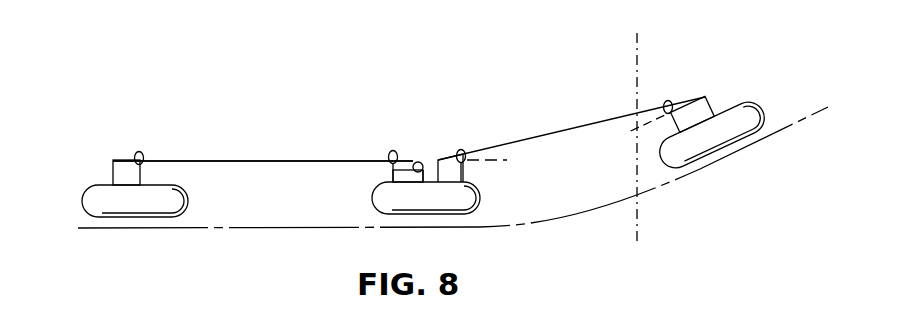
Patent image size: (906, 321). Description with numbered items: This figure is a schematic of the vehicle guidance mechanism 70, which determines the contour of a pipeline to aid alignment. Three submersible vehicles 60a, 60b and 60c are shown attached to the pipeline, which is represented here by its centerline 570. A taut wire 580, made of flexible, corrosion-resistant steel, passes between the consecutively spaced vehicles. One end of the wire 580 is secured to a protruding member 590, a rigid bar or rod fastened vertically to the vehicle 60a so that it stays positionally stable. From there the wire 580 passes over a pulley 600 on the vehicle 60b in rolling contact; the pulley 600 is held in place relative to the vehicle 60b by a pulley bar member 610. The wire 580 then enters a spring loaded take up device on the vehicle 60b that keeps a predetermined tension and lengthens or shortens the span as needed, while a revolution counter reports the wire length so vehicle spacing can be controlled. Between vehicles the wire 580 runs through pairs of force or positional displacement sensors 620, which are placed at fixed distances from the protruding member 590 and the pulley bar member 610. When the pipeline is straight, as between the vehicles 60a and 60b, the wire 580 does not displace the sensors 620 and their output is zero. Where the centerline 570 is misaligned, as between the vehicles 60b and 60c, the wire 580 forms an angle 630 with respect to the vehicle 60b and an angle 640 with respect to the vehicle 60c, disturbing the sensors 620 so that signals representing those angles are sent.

The vehicle guidance mechanism 70 is at (300, 149).
The pipeline centerline 570 is at (583, 211).
The taut wire 580 is at (207, 146).
The protruding member 590 is at (113, 173).
The pulley 600 is at (422, 163).
The pulley bar member 610 is at (423, 169).
The force or positional displacement sensors 620 is at (140, 174).
The angle 630 is at (503, 113).
The angle 640 is at (648, 141).
The submersible vehicle 60a is at (145, 201).
The submersible vehicle 60b is at (443, 198).
The submersible vehicle 60c is at (743, 118).